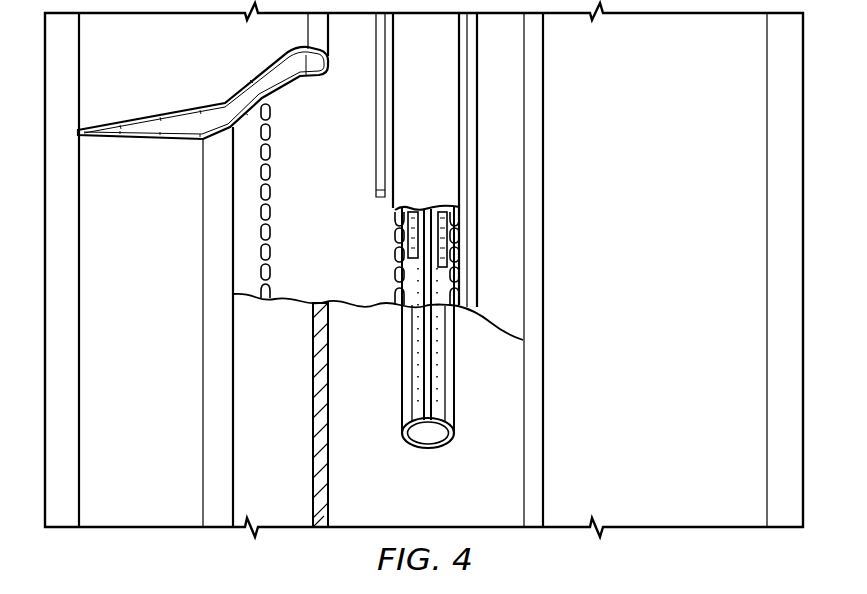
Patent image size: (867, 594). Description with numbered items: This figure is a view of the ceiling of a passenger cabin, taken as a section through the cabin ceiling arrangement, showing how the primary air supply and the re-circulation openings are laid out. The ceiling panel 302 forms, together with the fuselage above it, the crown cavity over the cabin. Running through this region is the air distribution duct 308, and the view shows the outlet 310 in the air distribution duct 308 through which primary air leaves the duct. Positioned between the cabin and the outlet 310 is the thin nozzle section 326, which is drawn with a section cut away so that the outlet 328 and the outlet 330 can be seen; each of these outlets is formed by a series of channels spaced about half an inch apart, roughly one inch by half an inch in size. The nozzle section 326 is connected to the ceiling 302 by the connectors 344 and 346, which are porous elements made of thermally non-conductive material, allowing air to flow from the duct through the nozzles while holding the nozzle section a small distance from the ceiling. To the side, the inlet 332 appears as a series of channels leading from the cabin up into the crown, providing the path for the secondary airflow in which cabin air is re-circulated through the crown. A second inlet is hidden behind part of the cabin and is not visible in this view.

The ceiling panel 302 is at (672, 283).
The air distribution duct 308 is at (428, 434).
The outlet 310 is at (426, 326).
The nozzle section 326 is at (444, 75).
The outlet 328 is at (397, 277).
The outlet 330 is at (460, 277).
The inlet 332 is at (271, 155).
The connector 344 is at (397, 220).
The connector 346 is at (443, 213).